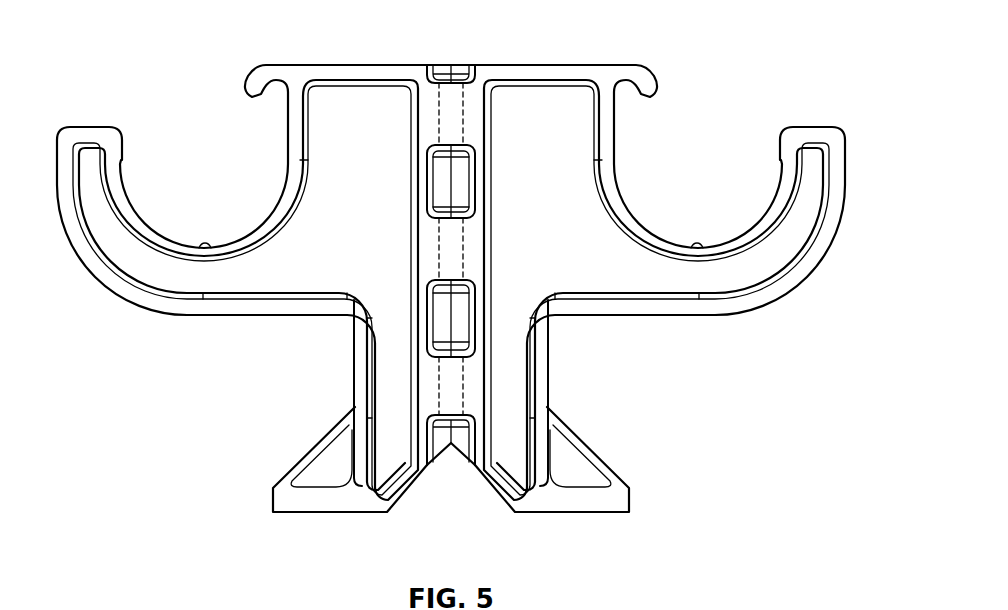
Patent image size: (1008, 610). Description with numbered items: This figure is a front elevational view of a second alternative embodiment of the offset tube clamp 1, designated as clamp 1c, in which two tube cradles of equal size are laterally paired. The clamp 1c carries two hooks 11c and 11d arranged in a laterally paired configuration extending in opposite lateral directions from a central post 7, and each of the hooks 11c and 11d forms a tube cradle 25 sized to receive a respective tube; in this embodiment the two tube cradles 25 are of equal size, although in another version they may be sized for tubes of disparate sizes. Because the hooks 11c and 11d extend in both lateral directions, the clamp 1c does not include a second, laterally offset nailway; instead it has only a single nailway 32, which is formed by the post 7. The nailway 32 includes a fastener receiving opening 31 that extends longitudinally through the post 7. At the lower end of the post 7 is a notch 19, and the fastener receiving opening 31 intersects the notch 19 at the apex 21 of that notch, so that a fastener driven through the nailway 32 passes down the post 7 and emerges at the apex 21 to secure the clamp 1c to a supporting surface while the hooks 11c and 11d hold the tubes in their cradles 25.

The clamp 1 is at (130, 38).
The clamp 1c is at (258, 320).
The post 7 is at (493, 217).
The hook 11c is at (832, 246).
The hook 11d is at (113, 287).
The notch 19 is at (420, 485).
The apex 21 is at (452, 447).
The tube cradle 25 is at (130, 203).
The fastener receiving opening 31 is at (437, 125).
The nailway 32 is at (493, 146).